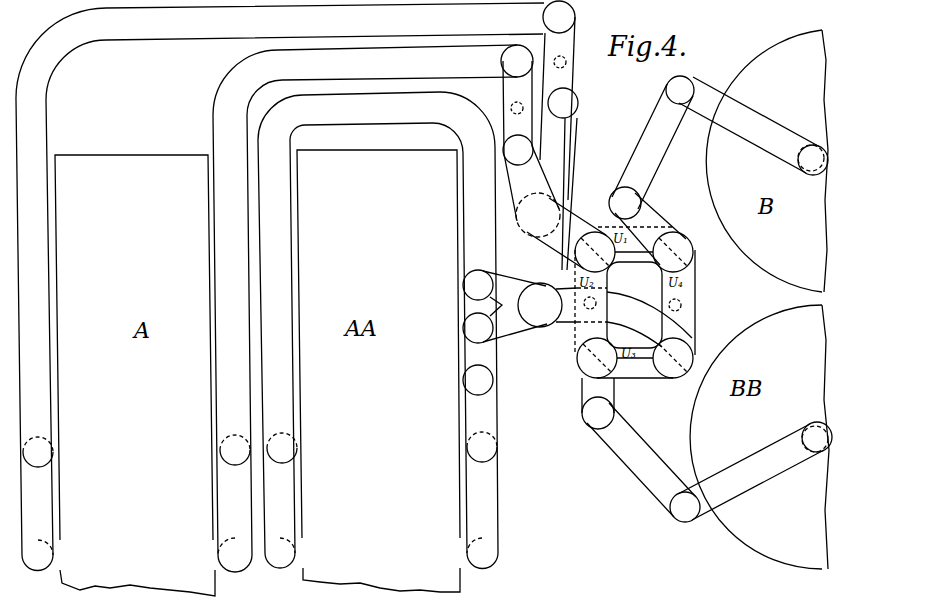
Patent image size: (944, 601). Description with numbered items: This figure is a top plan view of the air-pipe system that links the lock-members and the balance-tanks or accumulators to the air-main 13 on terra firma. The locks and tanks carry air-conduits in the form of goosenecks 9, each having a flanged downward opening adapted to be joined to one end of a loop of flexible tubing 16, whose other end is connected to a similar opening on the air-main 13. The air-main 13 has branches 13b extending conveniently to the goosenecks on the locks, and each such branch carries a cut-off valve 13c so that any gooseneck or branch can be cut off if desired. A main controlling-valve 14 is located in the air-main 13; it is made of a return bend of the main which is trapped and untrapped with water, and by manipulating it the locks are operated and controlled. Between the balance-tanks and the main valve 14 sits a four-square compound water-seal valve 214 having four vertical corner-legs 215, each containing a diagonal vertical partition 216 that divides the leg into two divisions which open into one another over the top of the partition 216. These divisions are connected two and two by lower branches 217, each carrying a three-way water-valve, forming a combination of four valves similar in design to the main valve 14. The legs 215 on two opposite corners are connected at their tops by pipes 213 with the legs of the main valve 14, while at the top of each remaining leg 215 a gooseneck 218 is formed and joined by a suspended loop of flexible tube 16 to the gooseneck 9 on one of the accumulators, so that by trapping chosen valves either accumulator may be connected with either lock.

The gooseneck 9 is at (427, 324).
The air-main 13 is at (545, 256).
The branch 13b is at (295, 279).
The cut-off valve 13c is at (520, 198).
The main controlling-valve 14 is at (552, 194).
The flexible tubing 16 is at (361, 299).
The pipe 213 is at (609, 272).
The four-square compound water-seal valve 214 is at (635, 302).
The corner-leg 215 is at (636, 302).
The vertical partition 216 is at (636, 305).
The lower branch 217 is at (637, 310).
The gooseneck 218 is at (634, 308).